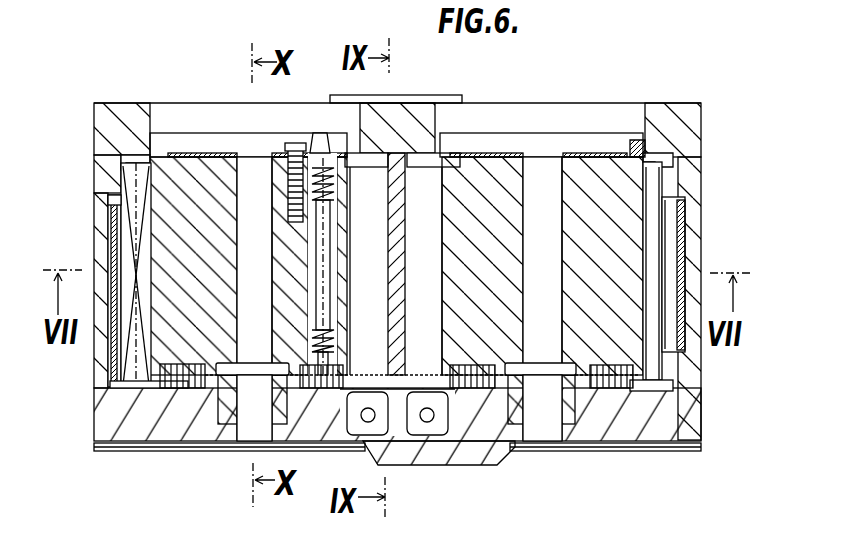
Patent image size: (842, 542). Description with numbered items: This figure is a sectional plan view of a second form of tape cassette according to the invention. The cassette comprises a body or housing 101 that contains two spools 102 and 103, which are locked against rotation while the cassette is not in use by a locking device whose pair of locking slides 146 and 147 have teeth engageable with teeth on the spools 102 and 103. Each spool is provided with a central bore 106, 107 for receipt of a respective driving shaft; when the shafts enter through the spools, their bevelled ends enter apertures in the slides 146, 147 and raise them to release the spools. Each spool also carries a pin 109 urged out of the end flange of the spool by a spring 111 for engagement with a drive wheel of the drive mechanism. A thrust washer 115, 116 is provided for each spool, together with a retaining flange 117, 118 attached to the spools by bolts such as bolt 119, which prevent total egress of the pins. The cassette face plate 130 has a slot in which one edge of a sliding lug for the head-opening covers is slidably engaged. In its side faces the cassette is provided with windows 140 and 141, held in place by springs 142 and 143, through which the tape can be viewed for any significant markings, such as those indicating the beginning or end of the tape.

The body or housing 101 is at (678, 125).
The spool 102 is at (203, 152).
The spool 103 is at (487, 163).
The central bore 106 is at (250, 167).
The central bore 107 is at (542, 163).
The pin 109 is at (316, 133).
The spring 111 is at (365, 157).
The thrust washer 115 is at (200, 380).
The thrust washer 116 is at (490, 375).
The retaining flange 117 is at (207, 170).
The retaining flange 118 is at (503, 163).
The bolt 119 is at (294, 167).
The cassette face plate 130 is at (121, 425).
The window 140 is at (110, 248).
The window 141 is at (687, 287).
The spring 142 is at (115, 200).
The spring 143 is at (668, 240).
The locking slide 146 is at (228, 400).
The locking slide 147 is at (577, 425).